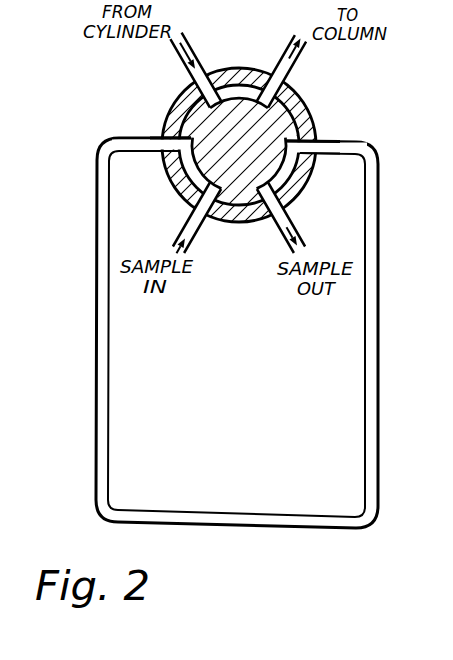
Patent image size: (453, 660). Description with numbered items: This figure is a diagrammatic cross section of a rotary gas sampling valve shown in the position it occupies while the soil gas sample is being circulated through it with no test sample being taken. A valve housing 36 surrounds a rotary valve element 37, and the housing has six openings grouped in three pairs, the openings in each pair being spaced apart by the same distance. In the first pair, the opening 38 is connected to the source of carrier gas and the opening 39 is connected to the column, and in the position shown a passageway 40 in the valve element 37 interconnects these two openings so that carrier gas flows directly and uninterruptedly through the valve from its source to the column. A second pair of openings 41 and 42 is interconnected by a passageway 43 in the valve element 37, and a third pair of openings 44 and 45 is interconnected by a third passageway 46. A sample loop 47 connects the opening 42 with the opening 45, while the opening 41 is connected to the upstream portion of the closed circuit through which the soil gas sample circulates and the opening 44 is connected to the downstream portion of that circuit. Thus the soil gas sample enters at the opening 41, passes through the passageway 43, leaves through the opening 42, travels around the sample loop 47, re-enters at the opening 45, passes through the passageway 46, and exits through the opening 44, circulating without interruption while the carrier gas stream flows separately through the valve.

The valve housing 36 is at (306, 108).
The rotary valve element 37 is at (301, 101).
The opening 38 is at (193, 73).
The opening 39 is at (285, 64).
The passageway 40 is at (220, 68).
The opening 41 is at (203, 230).
The opening 42 is at (150, 136).
The passageway 43 is at (200, 188).
The opening 44 is at (300, 220).
The opening 45 is at (327, 141).
The passageway 46 is at (305, 168).
The sample loop 47 is at (364, 372).